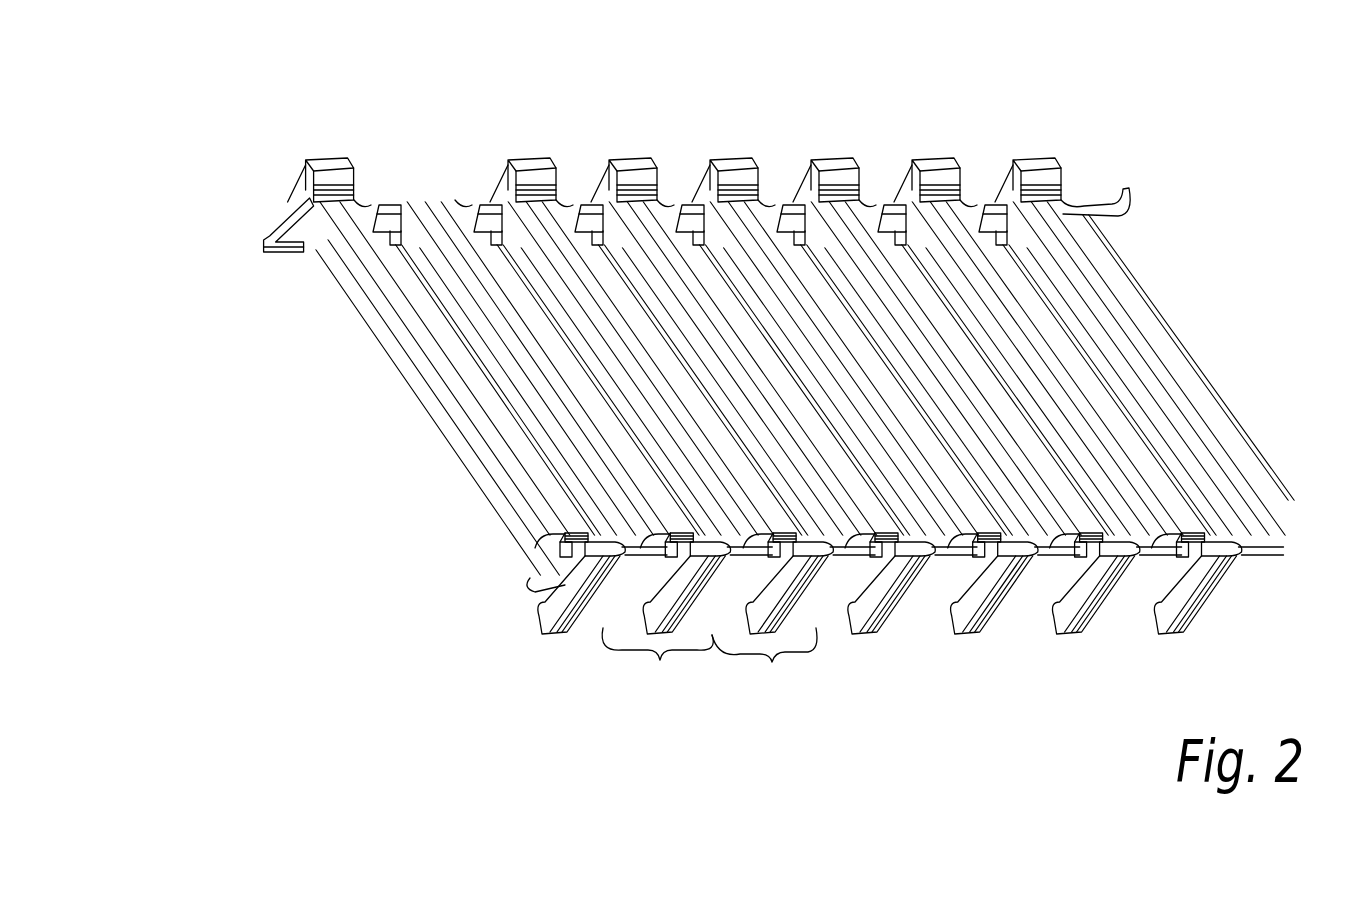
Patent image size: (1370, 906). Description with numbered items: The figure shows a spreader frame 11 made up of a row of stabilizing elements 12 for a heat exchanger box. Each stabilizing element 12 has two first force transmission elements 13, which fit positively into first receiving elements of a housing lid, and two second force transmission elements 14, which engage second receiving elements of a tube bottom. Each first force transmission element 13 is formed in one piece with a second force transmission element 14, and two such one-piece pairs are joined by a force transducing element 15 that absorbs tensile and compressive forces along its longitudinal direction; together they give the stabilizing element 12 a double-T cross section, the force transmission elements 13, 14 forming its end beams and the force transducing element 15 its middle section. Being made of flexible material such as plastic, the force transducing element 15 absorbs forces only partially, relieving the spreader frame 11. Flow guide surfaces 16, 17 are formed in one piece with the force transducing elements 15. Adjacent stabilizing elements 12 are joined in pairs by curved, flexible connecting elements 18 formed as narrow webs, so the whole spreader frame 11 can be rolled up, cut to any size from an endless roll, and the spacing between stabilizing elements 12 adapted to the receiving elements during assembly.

The spreader frame 11 is at (1243, 250).
The stabilizing element 12 is at (709, 671).
The first force transmission element 13 is at (332, 172).
The second force transmission element 14 is at (278, 242).
The force transducing element 15 is at (427, 400).
The flow guide surface 16 is at (430, 350).
The flow guide surface 17 is at (431, 298).
The connecting element 18 is at (386, 212).